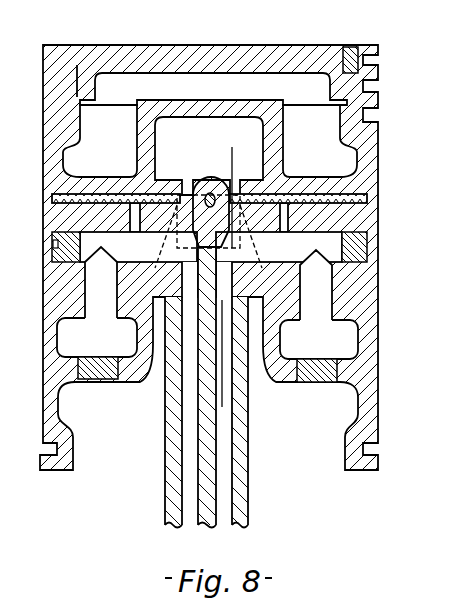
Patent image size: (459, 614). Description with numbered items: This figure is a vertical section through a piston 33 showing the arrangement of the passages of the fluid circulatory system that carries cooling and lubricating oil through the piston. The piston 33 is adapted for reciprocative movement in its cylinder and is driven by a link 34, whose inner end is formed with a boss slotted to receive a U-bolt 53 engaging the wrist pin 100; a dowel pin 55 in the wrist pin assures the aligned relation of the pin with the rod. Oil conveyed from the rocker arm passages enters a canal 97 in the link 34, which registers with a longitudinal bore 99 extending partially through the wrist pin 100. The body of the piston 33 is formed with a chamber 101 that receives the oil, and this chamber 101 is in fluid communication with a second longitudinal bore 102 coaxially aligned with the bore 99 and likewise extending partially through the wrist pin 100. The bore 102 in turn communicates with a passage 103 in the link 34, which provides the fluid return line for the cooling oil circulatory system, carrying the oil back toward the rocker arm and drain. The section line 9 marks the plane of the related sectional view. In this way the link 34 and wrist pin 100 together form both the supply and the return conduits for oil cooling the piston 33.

The piston 33 is at (373, 397).
The chamber 101 is at (332, 153).
The wrist pin 100 is at (348, 217).
The second longitudinal bore 102 is at (327, 250).
The longitudinal bore 99 is at (88, 242).
The canal 97 is at (190, 487).
The passage 103 is at (222, 498).
The link 34 is at (242, 475).
The U-bolt 53 is at (195, 190).
The dowel pin 55 is at (205, 186).
The section line 9 is at (233, 150).